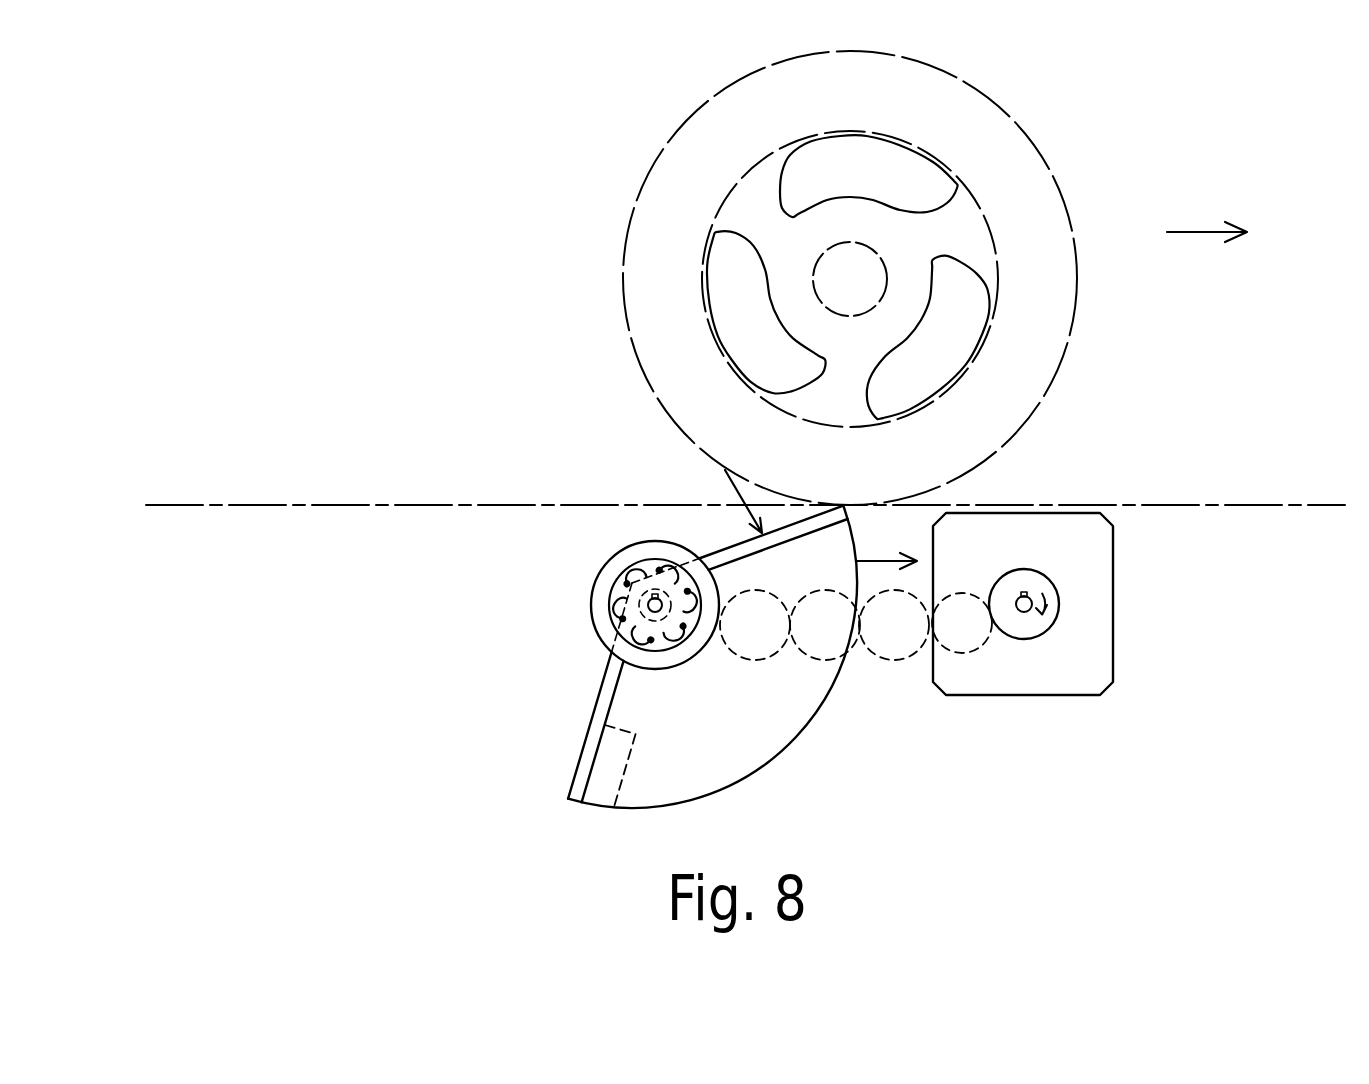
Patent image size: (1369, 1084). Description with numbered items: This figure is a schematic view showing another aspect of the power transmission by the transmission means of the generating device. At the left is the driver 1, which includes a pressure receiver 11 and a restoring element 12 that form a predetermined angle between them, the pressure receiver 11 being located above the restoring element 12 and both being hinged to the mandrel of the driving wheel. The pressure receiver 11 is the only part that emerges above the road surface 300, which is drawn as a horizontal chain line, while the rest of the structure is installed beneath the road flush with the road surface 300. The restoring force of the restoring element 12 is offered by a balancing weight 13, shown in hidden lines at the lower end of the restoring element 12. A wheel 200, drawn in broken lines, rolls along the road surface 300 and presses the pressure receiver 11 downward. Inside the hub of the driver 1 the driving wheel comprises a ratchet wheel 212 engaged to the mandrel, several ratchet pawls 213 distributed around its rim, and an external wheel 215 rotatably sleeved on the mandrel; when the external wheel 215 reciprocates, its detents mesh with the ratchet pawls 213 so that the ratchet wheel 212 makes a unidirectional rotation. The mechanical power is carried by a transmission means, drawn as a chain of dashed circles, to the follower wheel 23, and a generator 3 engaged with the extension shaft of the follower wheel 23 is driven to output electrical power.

The wheel (workpiece) 200 is at (643, 187).
The road surface 300 is at (247, 505).
The driver 1 is at (651, 627).
The pressure receiver 11 is at (813, 531).
The restoring element 12 is at (571, 793).
The balancing weight 13 is at (608, 758).
The ratchet wheel 212 is at (637, 567).
The external wheel 215 is at (607, 607).
The ratchet pawl 213 is at (622, 627).
The generator 3 is at (1070, 662).
The follower wheel 23 is at (1033, 678).